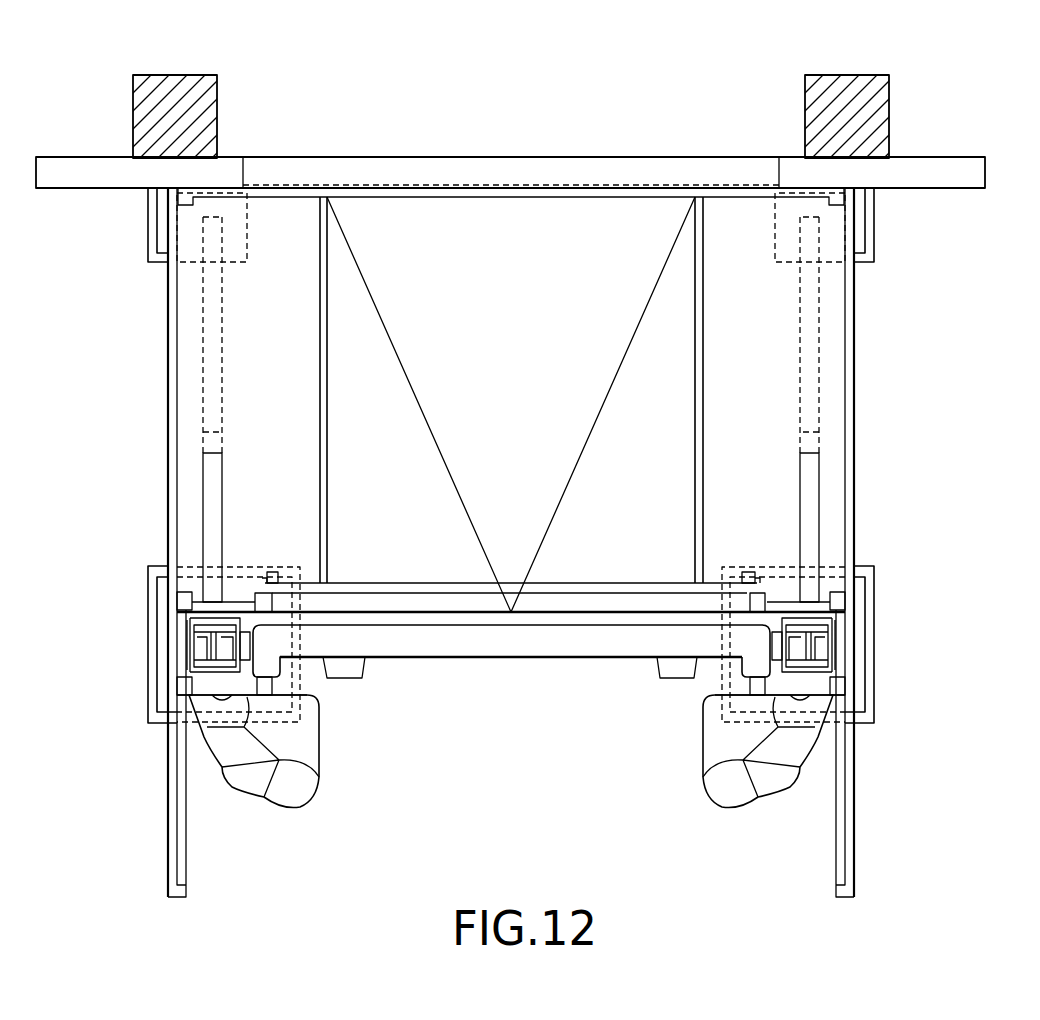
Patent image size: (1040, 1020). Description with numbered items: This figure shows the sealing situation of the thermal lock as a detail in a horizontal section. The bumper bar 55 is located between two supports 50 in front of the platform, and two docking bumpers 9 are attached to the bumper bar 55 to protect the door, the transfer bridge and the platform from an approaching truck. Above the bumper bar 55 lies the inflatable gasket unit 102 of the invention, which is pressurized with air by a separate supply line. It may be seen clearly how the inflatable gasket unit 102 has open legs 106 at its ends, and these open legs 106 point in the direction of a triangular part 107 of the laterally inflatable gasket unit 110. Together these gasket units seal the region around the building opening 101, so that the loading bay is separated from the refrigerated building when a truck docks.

The building opening 101 is at (584, 168).
The inflatable gasket unit 102 is at (588, 642).
The docking bumper 9 is at (352, 676).
The bumper bar 55 is at (770, 645).
The support 50 is at (808, 640).
The open leg 106 is at (752, 663).
The triangular part 107 is at (300, 743).
The laterally inflatable gasket unit 110 is at (800, 750).